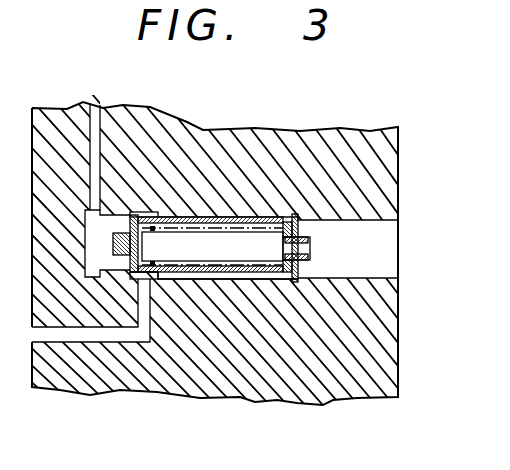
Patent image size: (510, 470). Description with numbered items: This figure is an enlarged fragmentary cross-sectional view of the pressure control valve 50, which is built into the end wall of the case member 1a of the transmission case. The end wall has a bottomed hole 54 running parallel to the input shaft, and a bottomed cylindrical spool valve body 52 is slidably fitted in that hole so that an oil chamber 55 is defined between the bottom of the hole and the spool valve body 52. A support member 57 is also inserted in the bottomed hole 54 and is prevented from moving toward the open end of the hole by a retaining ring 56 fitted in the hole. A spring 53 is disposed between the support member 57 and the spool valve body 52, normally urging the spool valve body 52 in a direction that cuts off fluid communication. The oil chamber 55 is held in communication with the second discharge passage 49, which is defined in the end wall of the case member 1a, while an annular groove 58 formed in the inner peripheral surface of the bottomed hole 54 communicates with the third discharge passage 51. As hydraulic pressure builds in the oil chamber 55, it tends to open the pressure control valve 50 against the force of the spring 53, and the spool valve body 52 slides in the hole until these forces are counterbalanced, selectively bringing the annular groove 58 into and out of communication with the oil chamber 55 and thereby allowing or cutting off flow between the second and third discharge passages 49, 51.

The case member 1a is at (399, 165).
The second discharge passage 49 is at (99, 172).
The pressure control valve 50 is at (201, 212).
The third discharge passage 51 is at (115, 341).
The spool valve body 52 is at (184, 218).
The spring 53 is at (247, 214).
The bottomed hole 54 is at (352, 277).
The oil chamber 55 is at (86, 256).
The retaining ring 56 is at (294, 215).
The support member 57 is at (255, 276).
The annular groove 58 is at (137, 212).